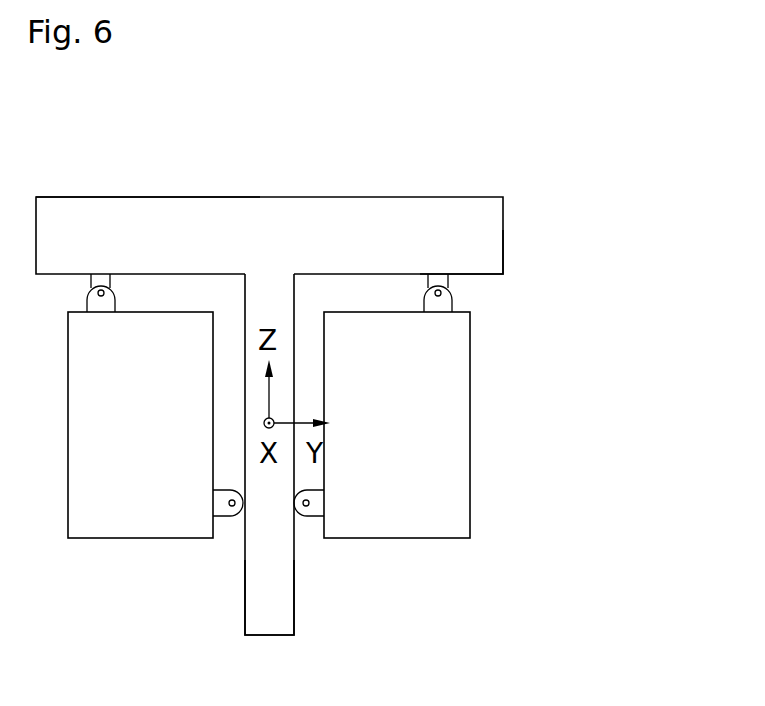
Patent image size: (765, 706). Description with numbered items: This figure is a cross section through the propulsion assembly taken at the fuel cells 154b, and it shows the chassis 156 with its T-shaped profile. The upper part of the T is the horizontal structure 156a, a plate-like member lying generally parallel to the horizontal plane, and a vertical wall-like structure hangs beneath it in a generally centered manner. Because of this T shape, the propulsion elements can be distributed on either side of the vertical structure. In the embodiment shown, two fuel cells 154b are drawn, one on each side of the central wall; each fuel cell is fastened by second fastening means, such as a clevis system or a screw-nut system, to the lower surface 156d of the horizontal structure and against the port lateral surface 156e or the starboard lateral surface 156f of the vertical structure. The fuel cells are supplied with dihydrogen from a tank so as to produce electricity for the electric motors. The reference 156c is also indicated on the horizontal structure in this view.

The chassis 156 is at (342, 383).
The horizontal structure 156a is at (433, 213).
The top surface of transverse bar 156c is at (150, 197).
The lower surface 156d is at (481, 276).
The port lateral surface 156e is at (294, 603).
The starboard lateral surface 156f is at (245, 612).
The fuel cell 154b is at (173, 436).